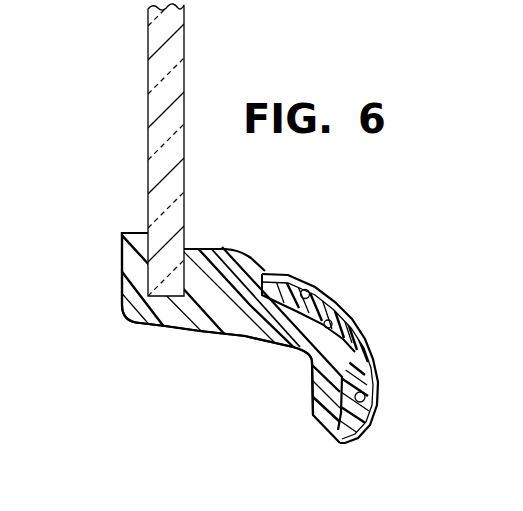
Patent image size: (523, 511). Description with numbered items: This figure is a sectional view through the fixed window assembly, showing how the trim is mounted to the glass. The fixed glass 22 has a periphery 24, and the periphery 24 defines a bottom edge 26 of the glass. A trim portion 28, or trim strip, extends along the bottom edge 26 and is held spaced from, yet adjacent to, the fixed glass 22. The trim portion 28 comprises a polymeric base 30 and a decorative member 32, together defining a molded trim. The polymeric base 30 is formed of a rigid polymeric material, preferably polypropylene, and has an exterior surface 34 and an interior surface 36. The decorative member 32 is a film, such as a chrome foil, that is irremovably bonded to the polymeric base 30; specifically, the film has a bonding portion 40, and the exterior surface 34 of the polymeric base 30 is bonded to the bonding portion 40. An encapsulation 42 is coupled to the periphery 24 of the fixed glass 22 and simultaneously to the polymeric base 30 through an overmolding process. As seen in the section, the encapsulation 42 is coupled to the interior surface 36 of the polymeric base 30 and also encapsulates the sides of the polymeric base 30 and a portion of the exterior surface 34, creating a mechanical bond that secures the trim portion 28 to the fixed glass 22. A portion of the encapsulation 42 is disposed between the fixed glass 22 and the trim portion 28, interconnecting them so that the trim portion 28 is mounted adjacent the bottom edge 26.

The fixed glass 22 is at (177, 53).
The periphery 24 is at (165, 255).
The bottom edge 26 is at (163, 324).
The trim portion 28 is at (270, 249).
The polymeric base 30 is at (343, 326).
The decorative member 32 is at (373, 358).
The exterior surface 34 is at (328, 297).
The interior surface 36 is at (298, 349).
The bonding portion 40 is at (366, 398).
The encapsulation 42 is at (224, 310).